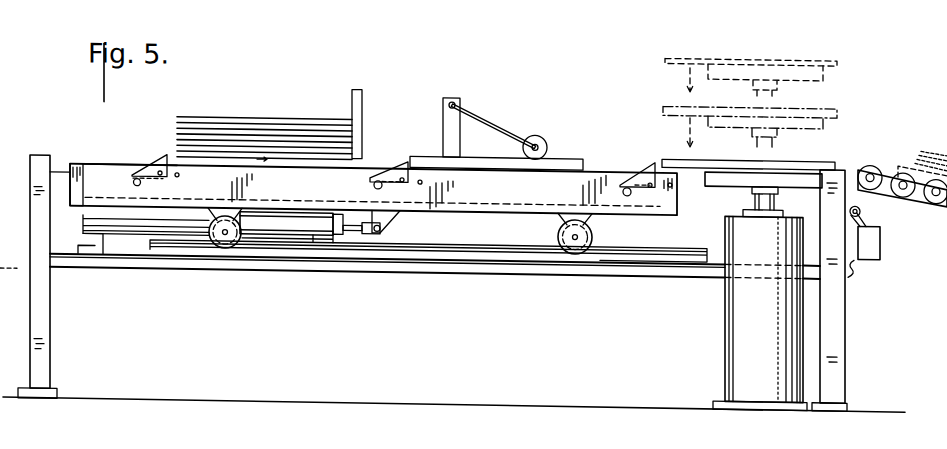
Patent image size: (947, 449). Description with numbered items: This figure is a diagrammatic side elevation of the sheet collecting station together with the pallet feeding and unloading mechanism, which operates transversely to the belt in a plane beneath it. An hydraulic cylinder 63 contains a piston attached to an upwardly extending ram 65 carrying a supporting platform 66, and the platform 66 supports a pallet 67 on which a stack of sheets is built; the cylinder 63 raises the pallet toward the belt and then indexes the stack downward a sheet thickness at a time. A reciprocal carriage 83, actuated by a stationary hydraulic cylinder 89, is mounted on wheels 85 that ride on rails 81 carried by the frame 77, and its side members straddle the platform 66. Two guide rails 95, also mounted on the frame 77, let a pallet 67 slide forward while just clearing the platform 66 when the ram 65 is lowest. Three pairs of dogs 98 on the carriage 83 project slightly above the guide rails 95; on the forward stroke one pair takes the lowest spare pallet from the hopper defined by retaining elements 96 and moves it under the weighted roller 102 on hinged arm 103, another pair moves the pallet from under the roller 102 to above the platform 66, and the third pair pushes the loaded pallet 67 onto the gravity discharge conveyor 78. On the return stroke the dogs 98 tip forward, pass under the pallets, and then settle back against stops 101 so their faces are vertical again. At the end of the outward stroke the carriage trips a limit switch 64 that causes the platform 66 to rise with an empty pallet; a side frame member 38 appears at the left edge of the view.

The side frame member 38 is at (35, 220).
The hydraulic cylinder 63 is at (742, 311).
The control switch 64 is at (873, 229).
The ram 65 is at (757, 188).
The supporting platform 66 is at (801, 163).
The pallet 67 is at (283, 134).
The frame 77 is at (38, 326).
The gravity discharge conveyor 78 is at (890, 154).
The rails 81 is at (490, 254).
The carriage 83 is at (84, 156).
The wheels 85 is at (210, 246).
The hydraulic cylinder 89 is at (295, 231).
The guide rails 95 is at (100, 161).
The retaining elements 96 is at (362, 92).
The dogs 98 is at (143, 161).
The stops 101 is at (133, 183).
The weighted roller 102 is at (538, 128).
The hinged arm 103 is at (497, 120).